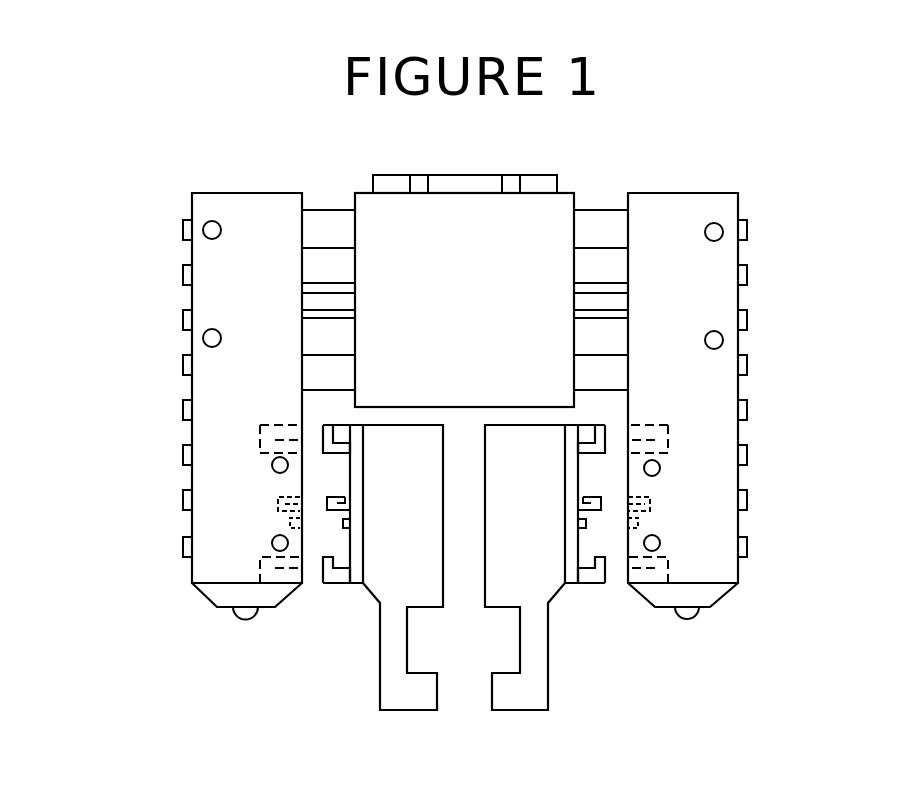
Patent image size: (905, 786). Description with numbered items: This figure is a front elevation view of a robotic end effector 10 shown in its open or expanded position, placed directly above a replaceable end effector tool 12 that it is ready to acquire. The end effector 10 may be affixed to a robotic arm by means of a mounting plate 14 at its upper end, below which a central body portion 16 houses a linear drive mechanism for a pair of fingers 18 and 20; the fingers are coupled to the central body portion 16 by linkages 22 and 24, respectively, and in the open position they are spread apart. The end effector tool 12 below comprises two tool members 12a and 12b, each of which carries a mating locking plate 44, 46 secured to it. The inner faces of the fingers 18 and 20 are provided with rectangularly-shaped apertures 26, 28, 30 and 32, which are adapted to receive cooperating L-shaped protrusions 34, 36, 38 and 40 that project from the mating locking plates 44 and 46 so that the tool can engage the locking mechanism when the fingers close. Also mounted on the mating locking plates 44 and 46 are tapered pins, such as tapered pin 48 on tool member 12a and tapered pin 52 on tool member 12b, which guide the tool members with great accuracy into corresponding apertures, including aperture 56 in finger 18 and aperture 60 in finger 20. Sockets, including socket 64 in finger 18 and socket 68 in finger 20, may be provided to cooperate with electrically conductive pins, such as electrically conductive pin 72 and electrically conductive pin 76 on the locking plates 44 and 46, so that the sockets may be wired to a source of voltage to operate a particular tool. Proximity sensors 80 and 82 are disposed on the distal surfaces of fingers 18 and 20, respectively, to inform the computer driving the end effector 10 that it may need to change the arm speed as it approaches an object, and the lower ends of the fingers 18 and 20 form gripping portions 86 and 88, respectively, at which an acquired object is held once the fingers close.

The end effector 10 is at (698, 189).
The end effector tool 12 is at (556, 738).
The tool member 12a is at (368, 594).
The tool member 12b is at (553, 590).
The mounting plate 14 is at (450, 185).
The central body portion 16 is at (482, 288).
The finger 18 is at (207, 440).
The finger 20 is at (722, 392).
The linkage 22 is at (327, 208).
The linkage 24 is at (601, 208).
The rectangularly-shaped aperture 26 is at (262, 432).
The rectangularly-shaped aperture 28 is at (262, 573).
The rectangularly-shaped aperture 30 is at (655, 443).
The rectangularly-shaped aperture 32 is at (655, 572).
The L-shaped protrusion 34 is at (323, 426).
The L-shaped protrusion 36 is at (342, 585).
The L-shaped protrusion 38 is at (602, 435).
The L-shaped protrusion 40 is at (583, 588).
The mating locking plate 44 is at (318, 580).
The mating locking plate 46 is at (600, 600).
The tapered pin 48 is at (400, 480).
The tapered pin 52 is at (580, 513).
The aperture 56 is at (290, 503).
The aperture 60 is at (640, 503).
The socket 64 is at (640, 526).
The socket 68 is at (292, 522).
The electrically conductive pin 72 is at (403, 540).
The electrically conductive pin 76 is at (580, 522).
The proximity sensor 80 is at (690, 616).
The proximity sensor 82 is at (246, 619).
The gripping portion 86 is at (387, 689).
The gripping portion 88 is at (530, 697).